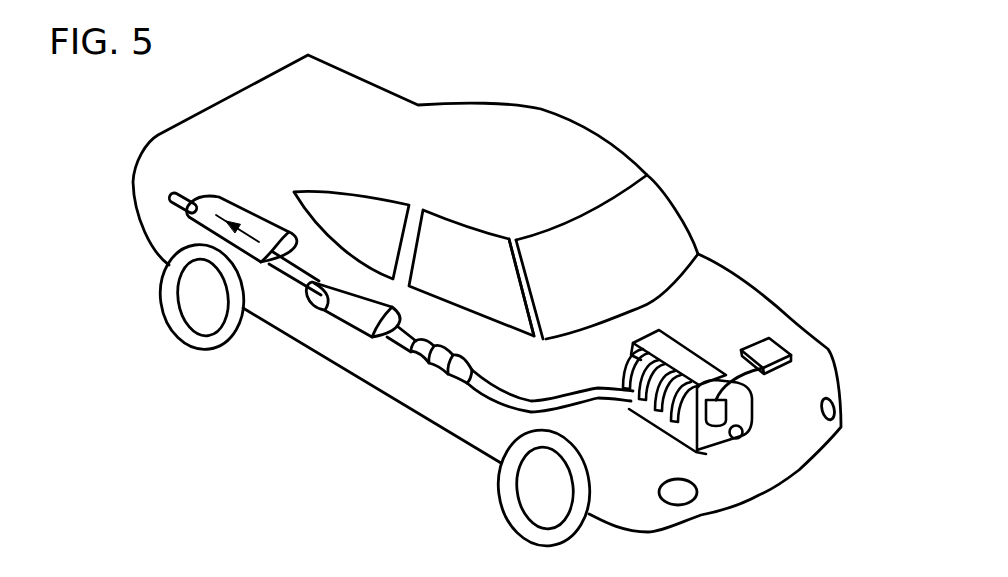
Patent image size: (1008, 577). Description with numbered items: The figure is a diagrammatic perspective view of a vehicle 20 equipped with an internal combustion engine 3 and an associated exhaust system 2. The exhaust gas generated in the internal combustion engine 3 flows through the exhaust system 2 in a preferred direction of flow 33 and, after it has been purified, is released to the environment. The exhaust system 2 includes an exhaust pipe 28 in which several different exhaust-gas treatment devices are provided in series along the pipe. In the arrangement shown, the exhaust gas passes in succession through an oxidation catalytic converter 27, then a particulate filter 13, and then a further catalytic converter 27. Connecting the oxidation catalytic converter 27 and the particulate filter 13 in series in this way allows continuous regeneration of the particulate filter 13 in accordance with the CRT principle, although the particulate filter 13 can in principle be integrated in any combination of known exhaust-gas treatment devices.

The vehicle 20 is at (713, 320).
The internal combustion engine 3 is at (740, 413).
The particulate filter 13 is at (441, 352).
The exhaust system 2 is at (397, 353).
The catalytic converter 27 is at (345, 314).
The exhaust pipe 28 is at (318, 292).
The preferred direction of flow 33 is at (215, 214).